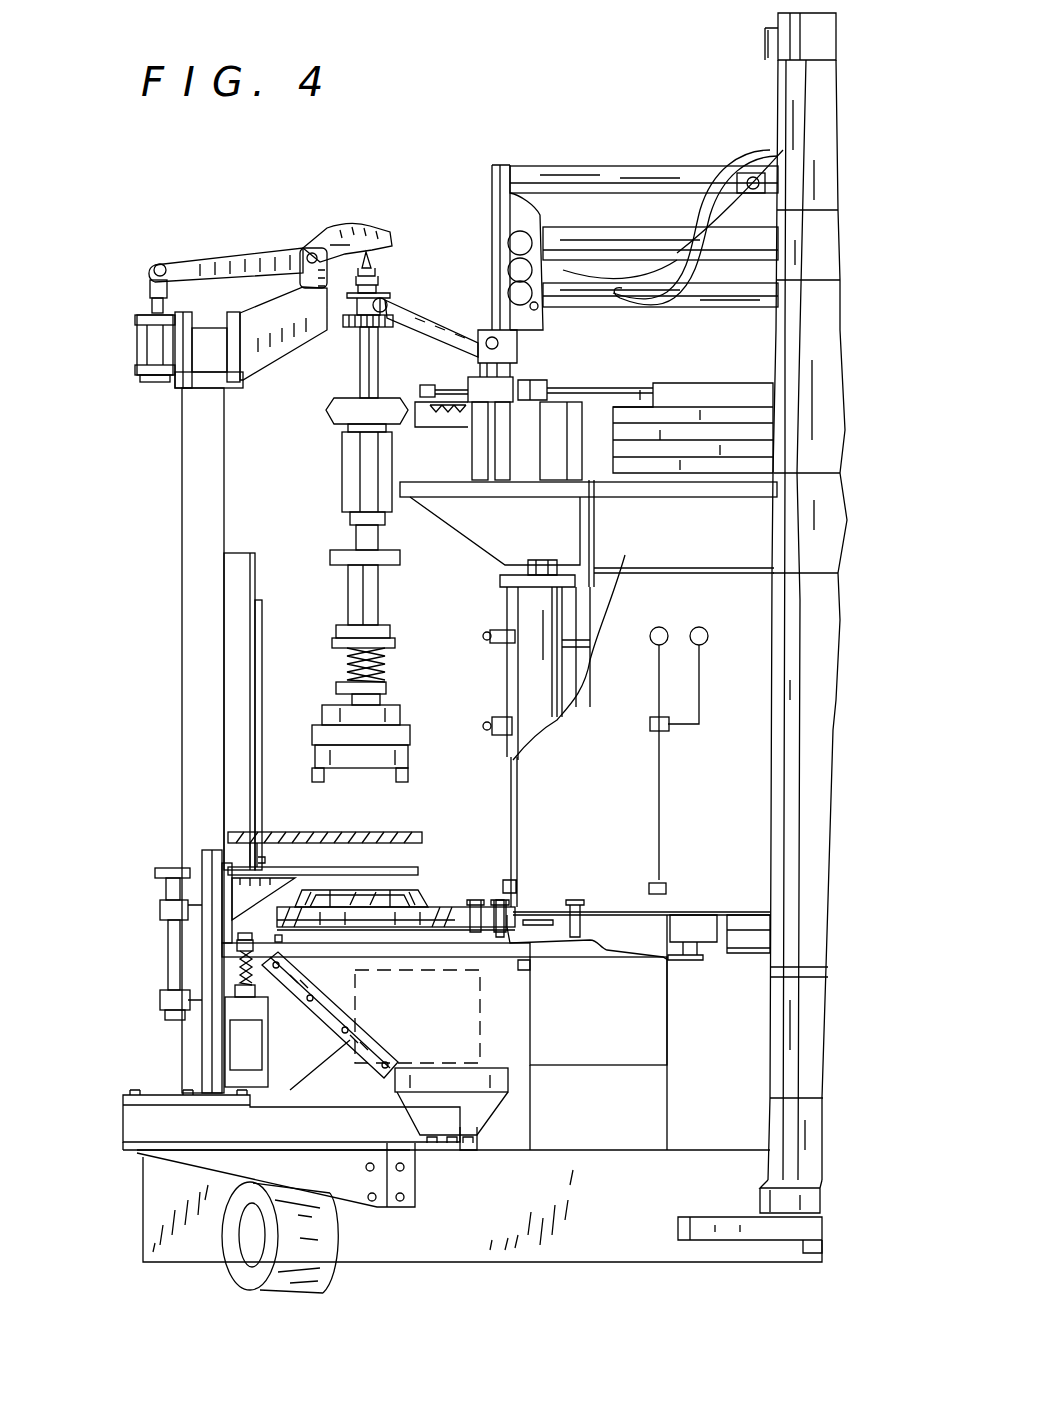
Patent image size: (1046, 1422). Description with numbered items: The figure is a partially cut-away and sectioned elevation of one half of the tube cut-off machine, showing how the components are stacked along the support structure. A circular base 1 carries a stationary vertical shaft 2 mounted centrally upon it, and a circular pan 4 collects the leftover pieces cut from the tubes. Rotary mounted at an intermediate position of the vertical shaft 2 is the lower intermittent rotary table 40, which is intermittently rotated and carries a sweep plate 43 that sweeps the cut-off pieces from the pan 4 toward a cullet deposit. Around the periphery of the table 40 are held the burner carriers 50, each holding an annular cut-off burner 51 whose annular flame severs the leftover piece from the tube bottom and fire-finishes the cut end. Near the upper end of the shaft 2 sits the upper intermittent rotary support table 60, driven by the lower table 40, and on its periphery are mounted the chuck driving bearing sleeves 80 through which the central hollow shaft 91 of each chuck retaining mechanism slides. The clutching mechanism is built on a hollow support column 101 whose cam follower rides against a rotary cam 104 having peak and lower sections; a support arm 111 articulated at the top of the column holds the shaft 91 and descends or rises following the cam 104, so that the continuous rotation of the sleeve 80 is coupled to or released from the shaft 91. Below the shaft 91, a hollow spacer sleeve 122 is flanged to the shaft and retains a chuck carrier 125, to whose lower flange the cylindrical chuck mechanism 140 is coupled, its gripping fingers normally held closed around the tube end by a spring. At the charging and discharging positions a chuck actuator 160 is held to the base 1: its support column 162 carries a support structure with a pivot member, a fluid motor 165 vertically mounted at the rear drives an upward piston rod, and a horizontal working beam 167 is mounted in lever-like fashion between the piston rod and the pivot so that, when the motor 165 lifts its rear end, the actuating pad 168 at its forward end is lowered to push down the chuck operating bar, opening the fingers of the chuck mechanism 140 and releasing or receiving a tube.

The circular base 1 is at (600, 1250).
The stationary vertical shaft 2 is at (818, 615).
The circular pan 4 is at (593, 1062).
The lower intermittent rotary table 40 is at (630, 957).
The sweep plate 43 is at (435, 1036).
The burner carrier 50 is at (455, 907).
The annular cut-off burner 51 is at (430, 853).
The upper intermittent rotary support table 60 is at (714, 555).
The chuck driving bearing sleeve 80 is at (342, 470).
The central hollow shaft 91 is at (360, 365).
The hollow support column 101 is at (468, 453).
The rotary cam 104 is at (560, 377).
The support arm 111 is at (462, 312).
The hollow spacer sleeve 122 is at (348, 594).
The chuck carrier 125 is at (345, 662).
The cylindrical chuck mechanism 140 is at (385, 728).
The chuck actuator 160 is at (221, 318).
The support column 162 is at (182, 558).
The fluid motor 165 is at (135, 348).
The horizontal working beam 167 is at (225, 247).
The actuating pad 168 is at (378, 258).